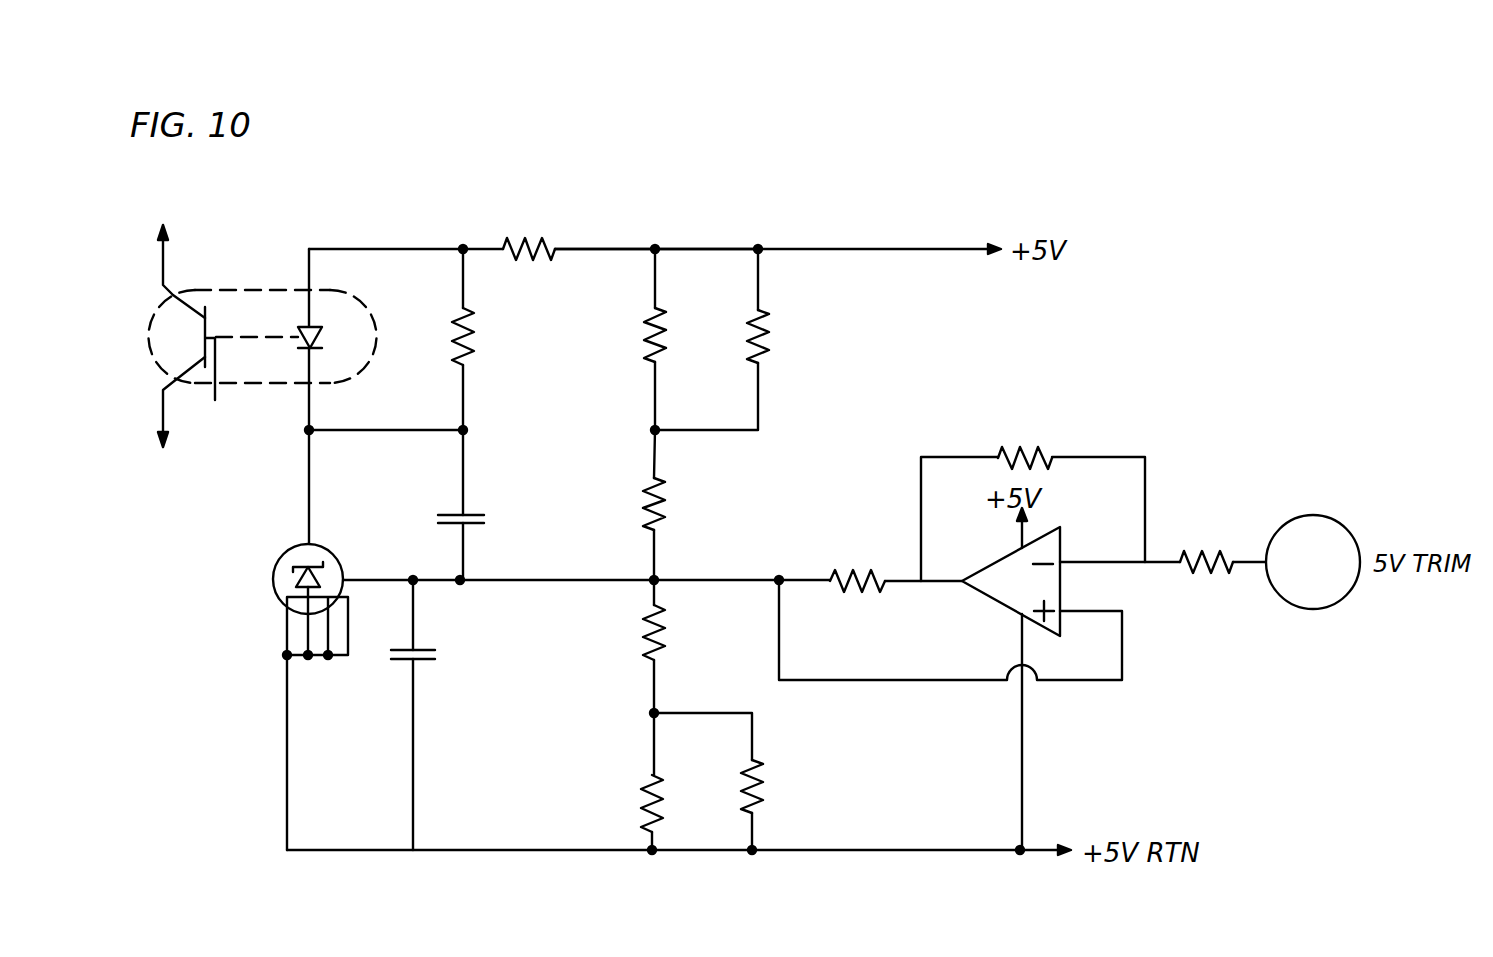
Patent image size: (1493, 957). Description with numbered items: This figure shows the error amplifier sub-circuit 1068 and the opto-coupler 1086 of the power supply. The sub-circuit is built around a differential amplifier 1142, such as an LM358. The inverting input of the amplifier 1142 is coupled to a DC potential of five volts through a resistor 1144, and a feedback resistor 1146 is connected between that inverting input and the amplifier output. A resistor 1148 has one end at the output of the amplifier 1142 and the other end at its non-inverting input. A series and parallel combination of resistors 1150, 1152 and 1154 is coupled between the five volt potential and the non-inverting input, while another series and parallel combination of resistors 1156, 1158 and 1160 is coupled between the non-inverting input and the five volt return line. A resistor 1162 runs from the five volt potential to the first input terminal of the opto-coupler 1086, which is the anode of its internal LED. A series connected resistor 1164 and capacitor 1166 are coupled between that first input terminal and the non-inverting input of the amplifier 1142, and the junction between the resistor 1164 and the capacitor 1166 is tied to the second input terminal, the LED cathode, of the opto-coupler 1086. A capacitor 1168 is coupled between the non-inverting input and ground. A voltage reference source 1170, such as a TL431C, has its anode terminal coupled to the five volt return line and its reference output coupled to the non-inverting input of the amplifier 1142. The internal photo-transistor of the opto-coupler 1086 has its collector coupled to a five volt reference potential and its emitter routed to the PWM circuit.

The error amplifier sub-circuit 1068 is at (774, 218).
The opto-coupler 1086 is at (246, 282).
The differential amplifier 1142 is at (982, 596).
The resistor 1144 is at (1205, 548).
The feedback resistor 1146 is at (1026, 448).
The resistor 1148 is at (868, 572).
The resistor 1150 is at (645, 350).
The resistor 1152 is at (768, 350).
The resistor 1154 is at (665, 515).
The resistor 1156 is at (642, 624).
The resistor 1158 is at (641, 796).
The resistor 1160 is at (763, 790).
The resistor 1162 is at (525, 244).
The resistor 1164 is at (477, 322).
The capacitor 1166 is at (473, 512).
The capacitor 1168 is at (430, 652).
The voltage reference source 1170 is at (330, 551).